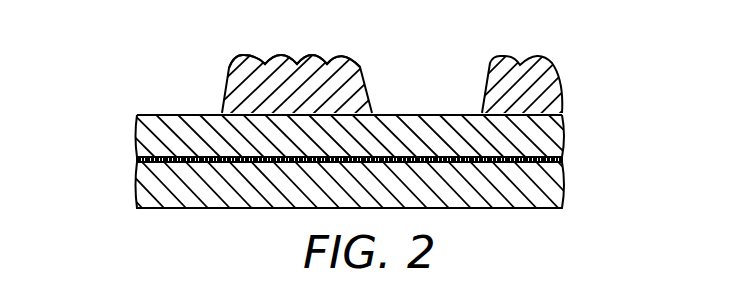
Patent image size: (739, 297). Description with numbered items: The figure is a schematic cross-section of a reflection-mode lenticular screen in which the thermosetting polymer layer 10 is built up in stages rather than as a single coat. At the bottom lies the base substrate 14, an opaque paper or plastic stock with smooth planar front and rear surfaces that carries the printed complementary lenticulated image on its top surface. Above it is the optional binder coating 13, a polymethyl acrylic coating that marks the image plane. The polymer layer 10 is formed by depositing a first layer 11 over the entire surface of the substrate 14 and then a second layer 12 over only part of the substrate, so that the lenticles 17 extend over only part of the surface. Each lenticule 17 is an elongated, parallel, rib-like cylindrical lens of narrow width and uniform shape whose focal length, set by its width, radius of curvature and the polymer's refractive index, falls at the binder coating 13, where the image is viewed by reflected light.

The thermosetting polymer layer 10 is at (115, 57).
The first layer 11 is at (598, 115).
The second layer 12 is at (408, 61).
The binder coating 13 is at (562, 158).
The base substrate 14 is at (562, 195).
The lenticles 17 is at (305, 57).